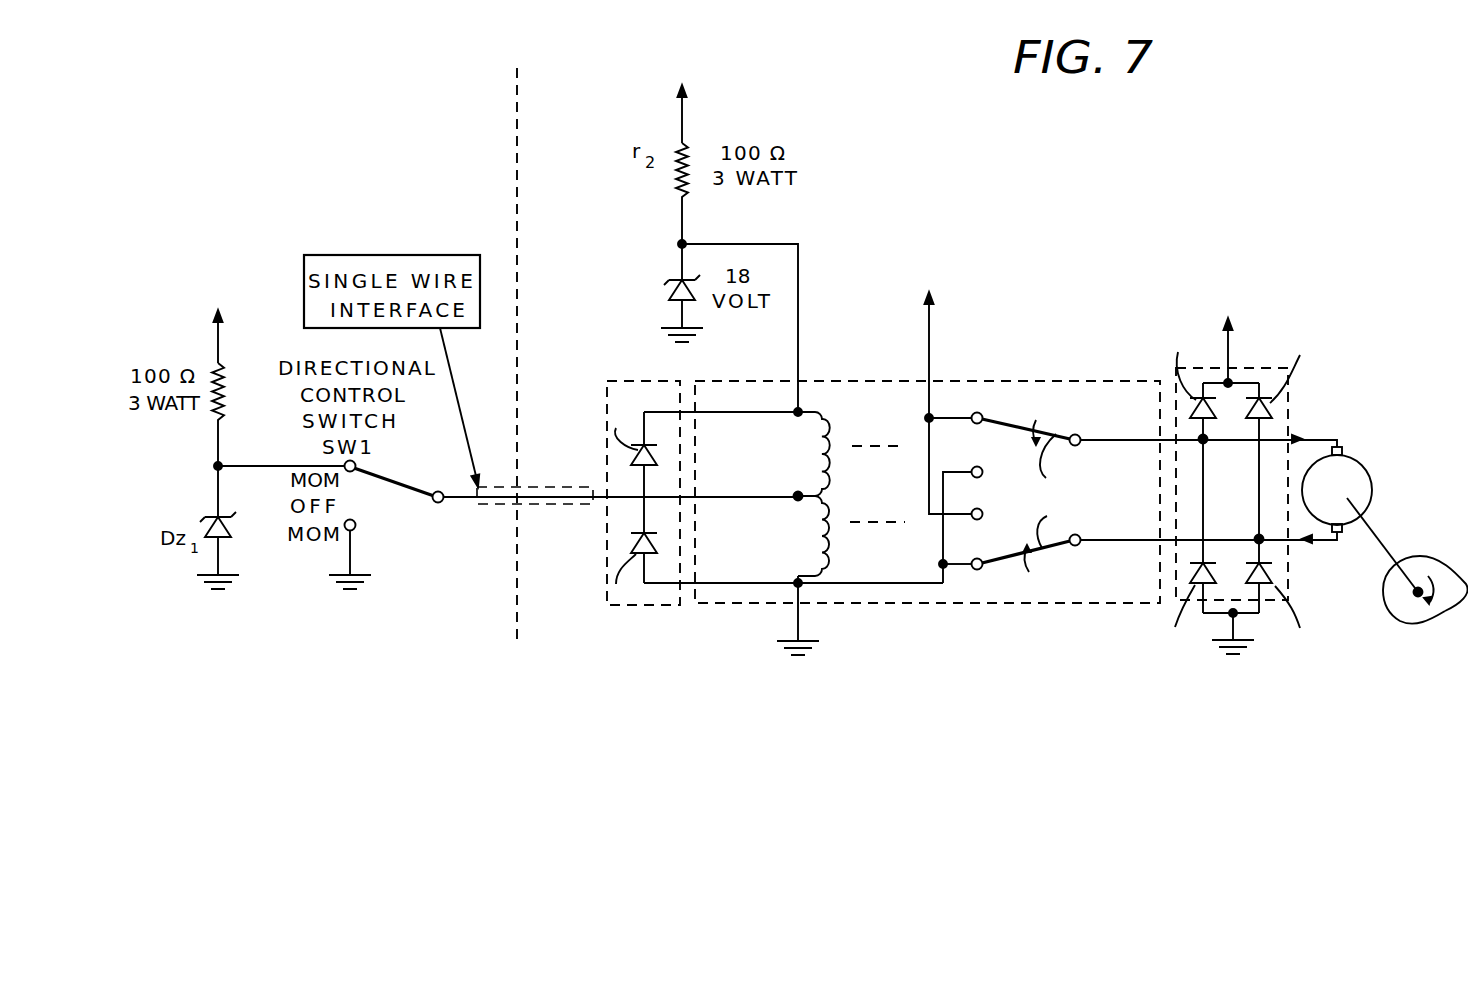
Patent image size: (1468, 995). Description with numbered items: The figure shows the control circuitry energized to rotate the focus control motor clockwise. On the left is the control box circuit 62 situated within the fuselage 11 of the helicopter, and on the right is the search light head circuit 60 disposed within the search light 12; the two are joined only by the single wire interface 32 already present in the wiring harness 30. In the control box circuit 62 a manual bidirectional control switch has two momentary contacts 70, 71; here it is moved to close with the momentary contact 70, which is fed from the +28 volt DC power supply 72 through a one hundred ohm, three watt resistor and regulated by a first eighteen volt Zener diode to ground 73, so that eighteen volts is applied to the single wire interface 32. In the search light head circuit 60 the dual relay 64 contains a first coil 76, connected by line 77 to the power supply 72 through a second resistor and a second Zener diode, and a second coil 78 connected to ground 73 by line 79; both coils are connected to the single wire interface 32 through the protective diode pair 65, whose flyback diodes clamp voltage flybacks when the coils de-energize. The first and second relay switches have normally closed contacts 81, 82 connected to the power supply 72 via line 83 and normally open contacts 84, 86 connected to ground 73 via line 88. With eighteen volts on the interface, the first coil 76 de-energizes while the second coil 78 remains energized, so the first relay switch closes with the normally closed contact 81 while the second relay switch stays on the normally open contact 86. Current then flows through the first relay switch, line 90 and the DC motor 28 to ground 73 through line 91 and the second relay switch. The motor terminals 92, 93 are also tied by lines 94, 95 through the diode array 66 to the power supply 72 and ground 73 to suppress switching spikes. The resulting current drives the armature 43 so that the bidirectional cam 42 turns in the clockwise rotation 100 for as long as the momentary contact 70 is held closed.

The fuselage 11 is at (342, 678).
The search light 12 is at (967, 687).
The DC motor 28 is at (1373, 490).
The wiring harness 30 is at (560, 487).
The single wire interface 32 is at (480, 504).
The bidirectional cam 42 is at (1395, 625).
The armature 43 is at (1385, 547).
The search light head circuit 60 is at (1113, 251).
The control box circuit 62 is at (266, 243).
The dual relay 64 is at (838, 381).
The protective diode pair 65 is at (607, 381).
The diode array 66 is at (1290, 368).
The momentary contact 70 is at (357, 462).
The momentary contact 71 is at (356, 527).
The +28 volt DC power supply 72 is at (222, 312).
The ground 73 is at (232, 590).
The first coil 76 is at (840, 470).
The line 77 is at (736, 244).
The second coil 78 is at (835, 505).
The line 79 is at (802, 627).
The normally closed contact 81 is at (975, 425).
The normally closed contact 82 is at (975, 521).
The line 83 is at (930, 333).
The normally open contact 84 is at (975, 478).
The normally open contact 86 is at (975, 571).
The line 88 is at (865, 583).
The line 90 is at (1312, 439).
The line 91 is at (1318, 542).
The terminal 92 is at (1344, 450).
The terminal 93 is at (1340, 534).
The line 94 is at (1207, 442).
The line 95 is at (1258, 536).
The clockwise rotation 100 is at (1440, 608).